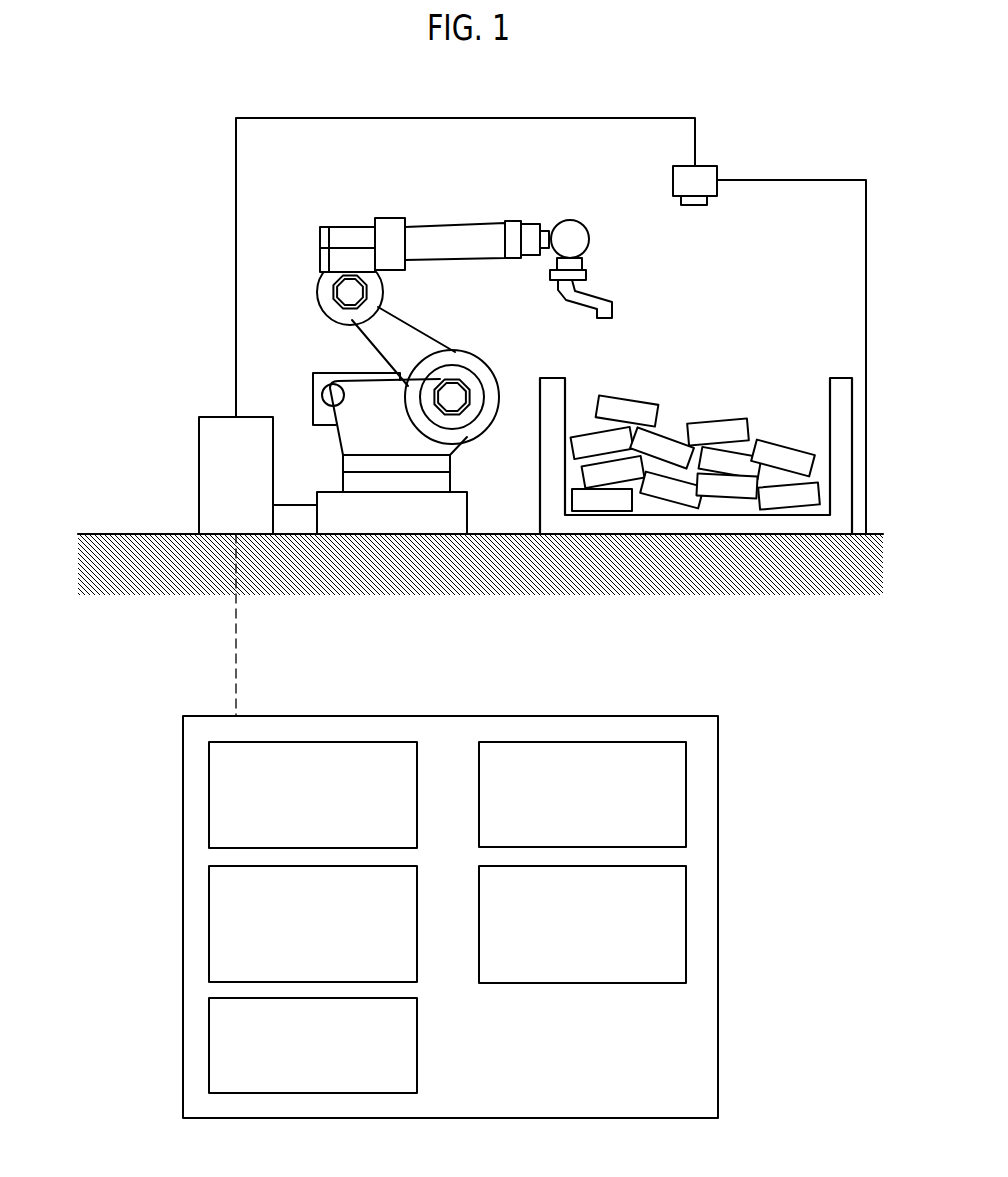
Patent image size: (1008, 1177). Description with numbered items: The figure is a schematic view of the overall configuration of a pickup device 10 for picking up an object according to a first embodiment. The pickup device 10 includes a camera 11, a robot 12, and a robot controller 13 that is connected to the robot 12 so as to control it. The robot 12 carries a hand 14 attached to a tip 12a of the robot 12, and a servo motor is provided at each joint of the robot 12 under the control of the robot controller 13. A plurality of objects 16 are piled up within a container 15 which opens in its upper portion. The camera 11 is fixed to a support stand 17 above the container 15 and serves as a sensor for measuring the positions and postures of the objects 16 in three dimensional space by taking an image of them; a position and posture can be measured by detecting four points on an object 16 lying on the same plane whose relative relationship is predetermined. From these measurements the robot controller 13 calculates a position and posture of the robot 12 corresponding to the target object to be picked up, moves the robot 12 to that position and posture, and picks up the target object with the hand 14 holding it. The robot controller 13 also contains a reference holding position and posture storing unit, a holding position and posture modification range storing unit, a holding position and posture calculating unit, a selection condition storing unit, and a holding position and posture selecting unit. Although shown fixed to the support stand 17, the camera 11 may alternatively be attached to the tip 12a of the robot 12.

The pickup device 10 is at (194, 198).
The camera 11 is at (702, 166).
The robot 12 is at (470, 227).
The tip 12a is at (610, 246).
The robot controller 13 is at (199, 445).
The hand 14 is at (558, 317).
The container 15 is at (840, 378).
The objects 16 is at (785, 443).
The support stand 17 is at (775, 180).